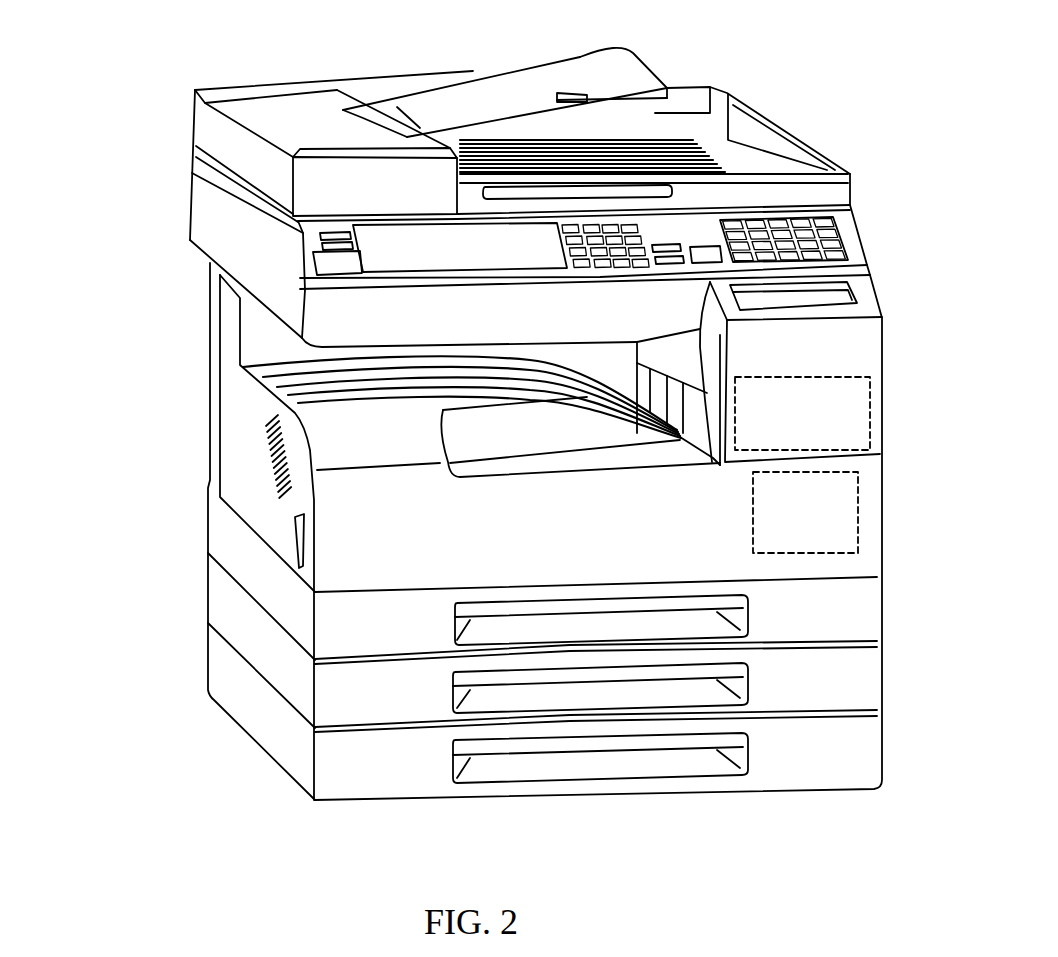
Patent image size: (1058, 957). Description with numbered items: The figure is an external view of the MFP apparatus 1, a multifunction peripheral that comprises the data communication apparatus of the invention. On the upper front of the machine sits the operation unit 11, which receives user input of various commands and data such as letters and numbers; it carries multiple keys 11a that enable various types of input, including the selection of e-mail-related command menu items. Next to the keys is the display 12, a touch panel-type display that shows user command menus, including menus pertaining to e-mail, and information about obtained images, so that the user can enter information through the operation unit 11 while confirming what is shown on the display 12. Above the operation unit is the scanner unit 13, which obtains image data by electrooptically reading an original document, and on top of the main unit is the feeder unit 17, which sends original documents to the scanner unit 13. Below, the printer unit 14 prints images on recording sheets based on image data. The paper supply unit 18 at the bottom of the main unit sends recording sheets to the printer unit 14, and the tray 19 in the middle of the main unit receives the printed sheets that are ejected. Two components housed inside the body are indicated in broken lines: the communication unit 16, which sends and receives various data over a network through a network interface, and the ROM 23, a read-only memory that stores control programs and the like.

The MFP apparatus 1 is at (47, 108).
The operation unit 11 is at (668, 228).
The keys 11a is at (627, 258).
The display 12 is at (452, 256).
The scanner unit 13 is at (184, 140).
The printer unit 14 is at (891, 446).
The communication unit 16 is at (752, 510).
The feeder unit 17 is at (402, 120).
The paper supply unit 18 is at (283, 600).
The tray 19 is at (567, 409).
The ROM 23 is at (806, 375).